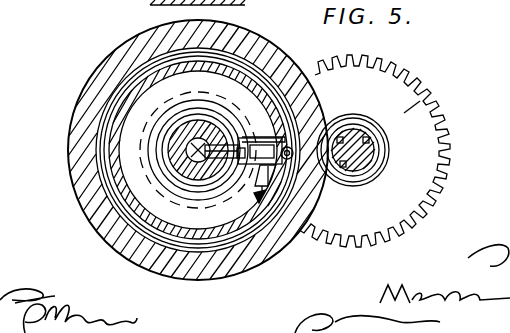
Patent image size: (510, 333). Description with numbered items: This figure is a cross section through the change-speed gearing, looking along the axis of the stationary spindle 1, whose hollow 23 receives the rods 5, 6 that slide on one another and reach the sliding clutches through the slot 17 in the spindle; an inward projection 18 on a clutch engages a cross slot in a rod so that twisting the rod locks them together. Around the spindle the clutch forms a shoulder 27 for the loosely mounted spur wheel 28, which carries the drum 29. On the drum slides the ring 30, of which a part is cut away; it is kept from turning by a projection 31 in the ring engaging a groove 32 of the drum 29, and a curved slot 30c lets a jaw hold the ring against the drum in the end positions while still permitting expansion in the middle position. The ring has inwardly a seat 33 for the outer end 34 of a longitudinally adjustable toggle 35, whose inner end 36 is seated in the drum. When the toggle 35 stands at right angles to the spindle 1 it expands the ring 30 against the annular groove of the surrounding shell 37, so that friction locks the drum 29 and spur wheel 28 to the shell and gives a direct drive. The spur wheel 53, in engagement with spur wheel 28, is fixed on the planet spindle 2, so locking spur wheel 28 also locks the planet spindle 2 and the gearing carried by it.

The stationary spindle 1 is at (93, 215).
The planet spindle 2 is at (368, 151).
The rod 5 is at (208, 142).
The rod 6 is at (198, 146).
The slot 17 is at (218, 162).
The inward projection 18 is at (190, 168).
The hollow 23 is at (145, 187).
The shoulder 27 is at (148, 148).
The spur wheel 28 is at (87, 174).
The drum 29 is at (310, 70).
The ring 30 is at (100, 123).
The slot 30c is at (299, 164).
The projection 31 is at (262, 199).
The groove 32 is at (268, 186).
The seat 33 is at (318, 122).
The outer end of toggle 34 is at (280, 172).
The toggle 35 is at (268, 168).
The inner end of toggle 36 is at (244, 164).
The shell 37 is at (110, 66).
The spur wheel 53 is at (405, 109).